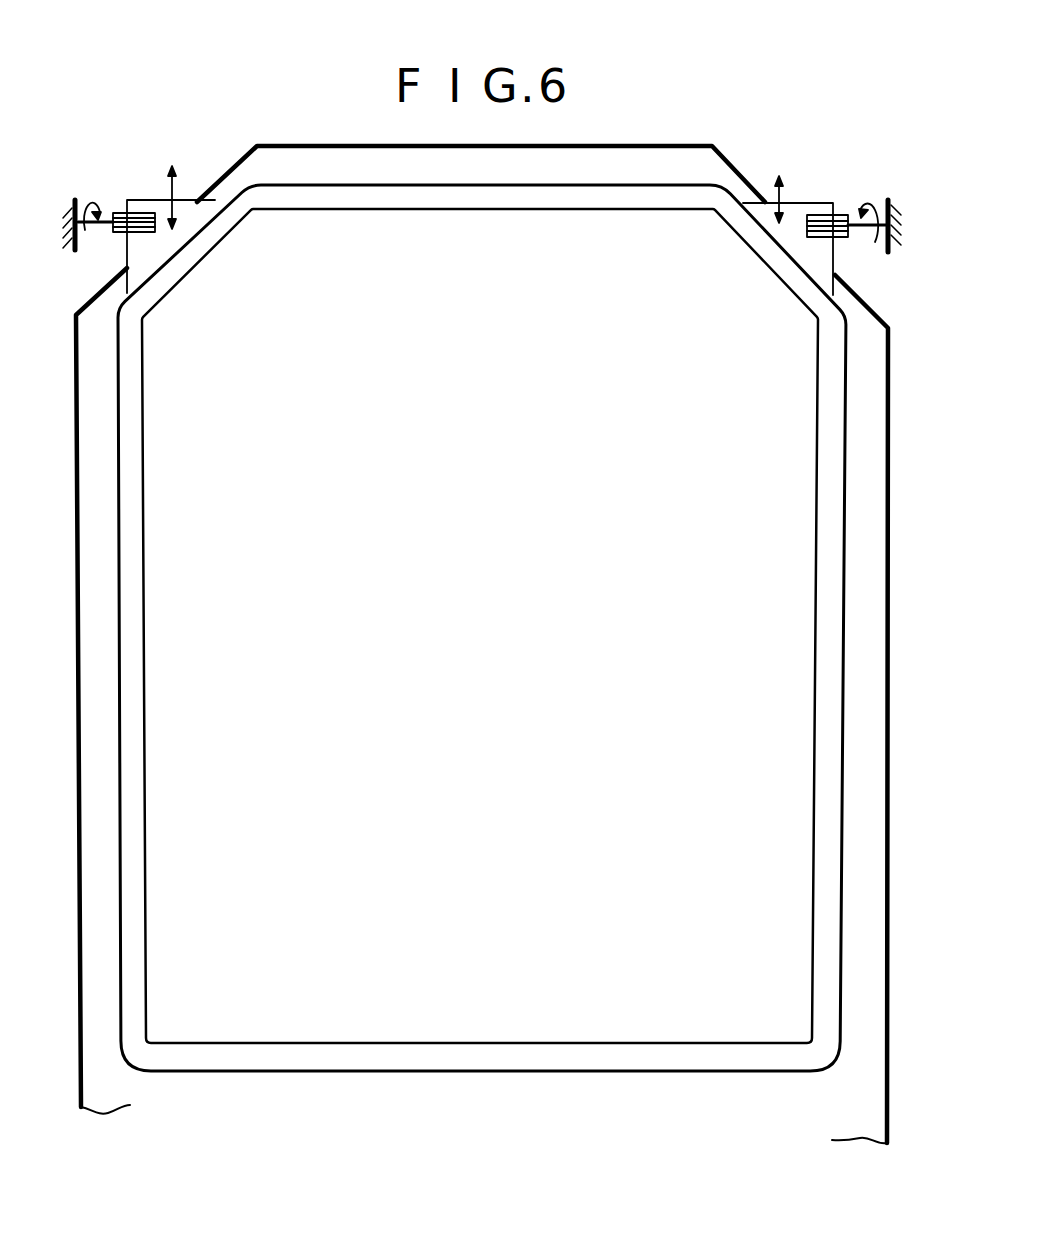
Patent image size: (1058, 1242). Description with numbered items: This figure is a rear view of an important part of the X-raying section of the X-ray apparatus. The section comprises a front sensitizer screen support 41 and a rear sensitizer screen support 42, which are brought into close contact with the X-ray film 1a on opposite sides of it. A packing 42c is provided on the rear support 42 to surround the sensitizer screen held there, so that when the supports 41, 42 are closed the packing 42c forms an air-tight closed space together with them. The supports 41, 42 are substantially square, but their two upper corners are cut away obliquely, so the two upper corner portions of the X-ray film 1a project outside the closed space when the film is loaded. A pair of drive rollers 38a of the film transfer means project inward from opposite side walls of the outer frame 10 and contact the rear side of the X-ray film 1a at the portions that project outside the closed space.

The front sensitizer screen support 41 is at (692, 163).
The packing 42c is at (835, 405).
The rear sensitizer screen support 42 is at (783, 557).
The X-ray film 1a is at (792, 215).
The drive roller 38a is at (819, 214).
The outer frame 10 is at (893, 226).